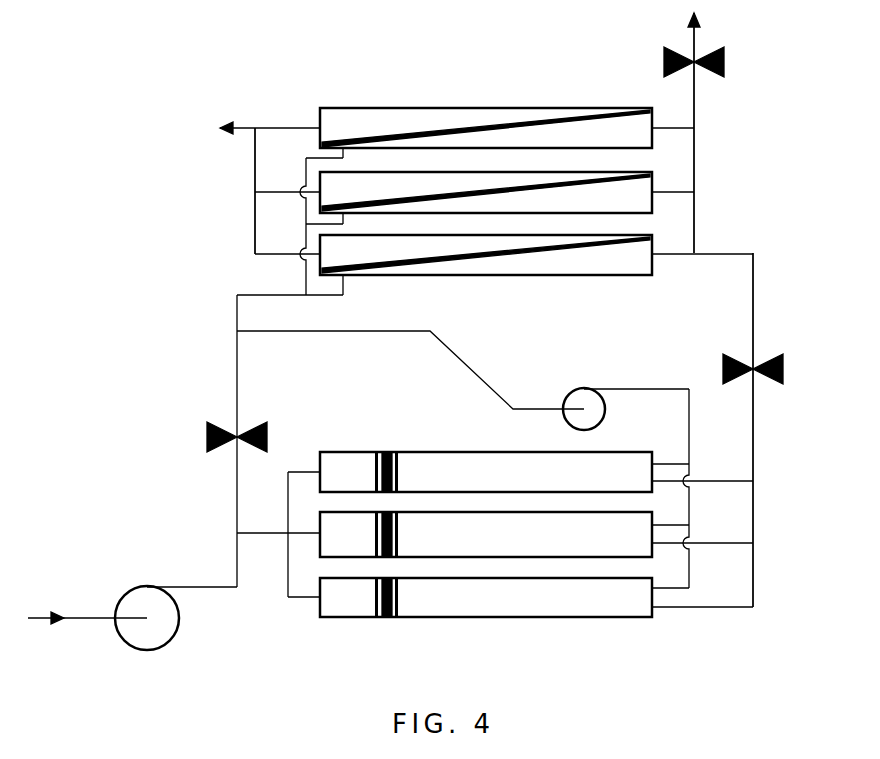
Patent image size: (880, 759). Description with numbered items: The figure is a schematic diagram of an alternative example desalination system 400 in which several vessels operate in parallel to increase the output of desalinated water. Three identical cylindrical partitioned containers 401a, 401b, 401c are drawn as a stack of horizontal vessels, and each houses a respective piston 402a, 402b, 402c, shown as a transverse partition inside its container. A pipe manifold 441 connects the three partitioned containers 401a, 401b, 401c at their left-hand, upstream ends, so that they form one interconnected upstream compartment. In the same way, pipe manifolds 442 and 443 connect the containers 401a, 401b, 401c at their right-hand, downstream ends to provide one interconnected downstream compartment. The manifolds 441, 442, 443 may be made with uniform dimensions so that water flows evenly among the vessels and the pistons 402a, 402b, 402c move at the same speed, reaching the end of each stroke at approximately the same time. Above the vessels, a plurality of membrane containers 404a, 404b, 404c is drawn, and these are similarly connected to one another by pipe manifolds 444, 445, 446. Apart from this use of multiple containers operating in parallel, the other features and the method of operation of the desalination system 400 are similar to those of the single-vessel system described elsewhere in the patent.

The desalination system 400 is at (186, 88).
The partitioned container 401a is at (422, 452).
The partitioned container 401b is at (525, 512).
The partitioned container 401c is at (492, 617).
The piston 402a is at (375, 463).
The piston 402b is at (375, 540).
The piston 402c is at (380, 617).
The membrane container 404a is at (445, 108).
The membrane container 404b is at (520, 172).
The membrane container 404c is at (515, 275).
The pipe manifold 441 is at (288, 568).
The pipe manifold 442 is at (753, 567).
The pipe manifold 443 is at (689, 448).
The pipe manifold 444 is at (694, 182).
The pipe manifold 445 is at (255, 215).
The pipe manifold 446 is at (302, 266).